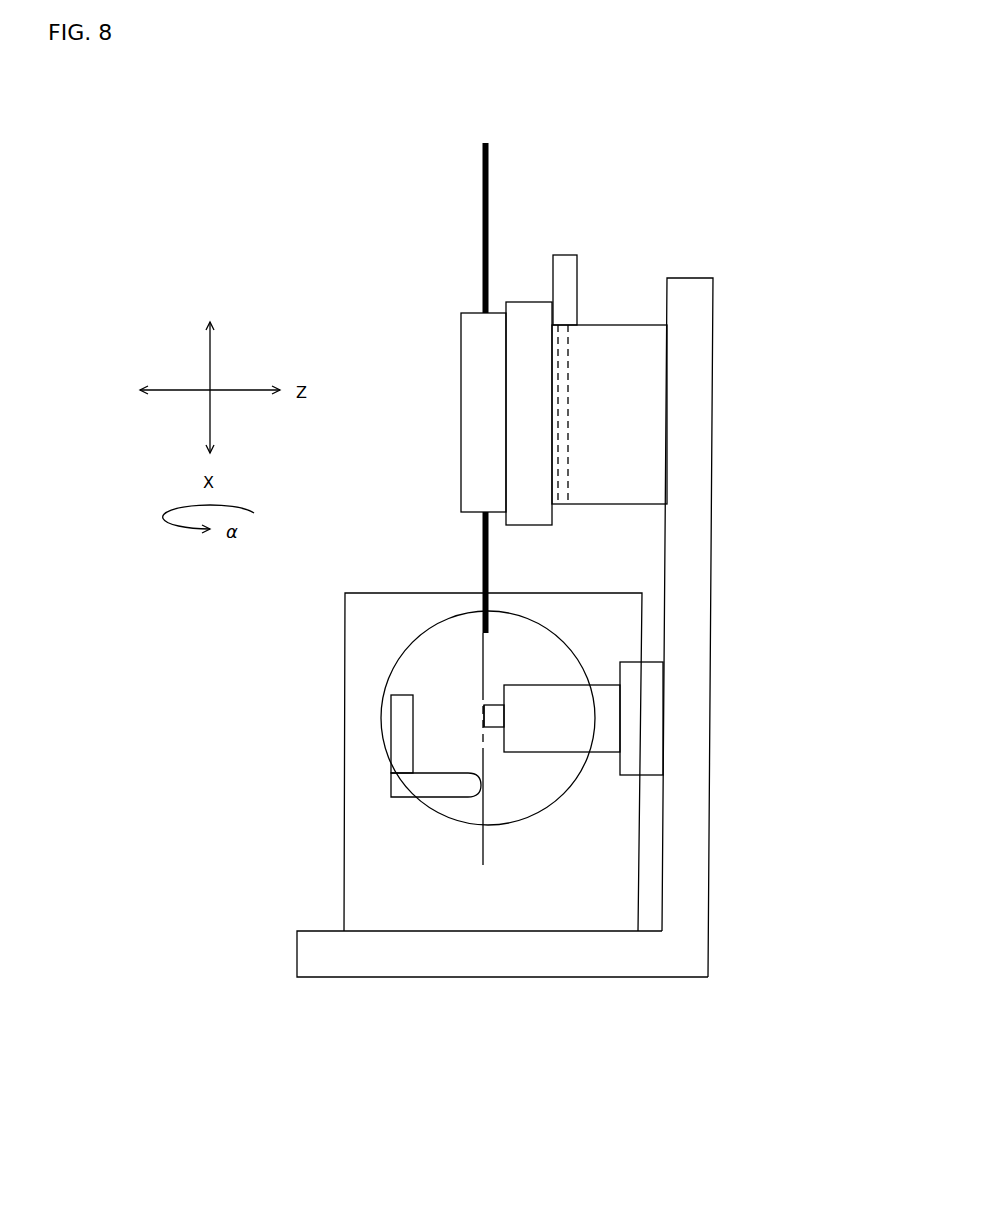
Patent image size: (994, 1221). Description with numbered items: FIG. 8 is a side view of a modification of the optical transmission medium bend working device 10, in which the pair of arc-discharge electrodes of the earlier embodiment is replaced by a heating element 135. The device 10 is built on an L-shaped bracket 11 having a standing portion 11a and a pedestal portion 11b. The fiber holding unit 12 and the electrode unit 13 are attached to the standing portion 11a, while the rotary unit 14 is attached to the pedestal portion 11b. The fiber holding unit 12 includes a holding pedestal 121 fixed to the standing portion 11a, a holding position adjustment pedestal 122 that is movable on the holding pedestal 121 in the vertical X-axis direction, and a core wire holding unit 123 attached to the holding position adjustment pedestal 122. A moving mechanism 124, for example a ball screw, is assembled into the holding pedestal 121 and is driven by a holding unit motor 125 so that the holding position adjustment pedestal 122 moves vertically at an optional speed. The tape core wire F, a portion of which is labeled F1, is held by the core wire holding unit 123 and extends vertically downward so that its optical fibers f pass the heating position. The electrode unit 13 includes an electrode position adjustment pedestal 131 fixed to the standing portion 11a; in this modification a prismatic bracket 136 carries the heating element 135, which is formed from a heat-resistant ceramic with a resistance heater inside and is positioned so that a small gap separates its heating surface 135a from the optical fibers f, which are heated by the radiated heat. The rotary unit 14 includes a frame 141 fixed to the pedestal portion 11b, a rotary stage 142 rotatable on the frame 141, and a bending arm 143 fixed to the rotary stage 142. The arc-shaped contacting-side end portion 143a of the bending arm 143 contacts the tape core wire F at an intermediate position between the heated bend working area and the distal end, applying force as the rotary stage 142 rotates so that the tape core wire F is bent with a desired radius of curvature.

The optical transmission medium bend working device 10 is at (300, 250).
The tape core wire F is at (455, 173).
The coated portion of optical fiber F1 is at (483, 240).
The optical fibers f is at (478, 848).
The L-shaped bracket 11 is at (690, 946).
The standing portion 11a is at (688, 550).
The pedestal portion 11b is at (486, 956).
The fiber holding unit 12 is at (596, 272).
The holding pedestal 121 is at (640, 345).
The holding position adjustment pedestal 122 is at (530, 325).
The core wire holding unit 123 is at (468, 403).
The moving mechanism 124 is at (568, 385).
The holding unit motor 125 is at (566, 286).
The electrode unit 13 is at (607, 665).
The electrode position adjustment pedestal 131 is at (641, 755).
The heating element 135 is at (497, 720).
The heating surface 135a is at (480, 705).
The prismatic bracket 136 is at (520, 698).
The rotary unit 14 is at (333, 686).
The frame 141 is at (355, 875).
The rotary stage 142 is at (410, 668).
The bending arm 143 is at (402, 728).
The contacting-side end portion 143a is at (480, 783).